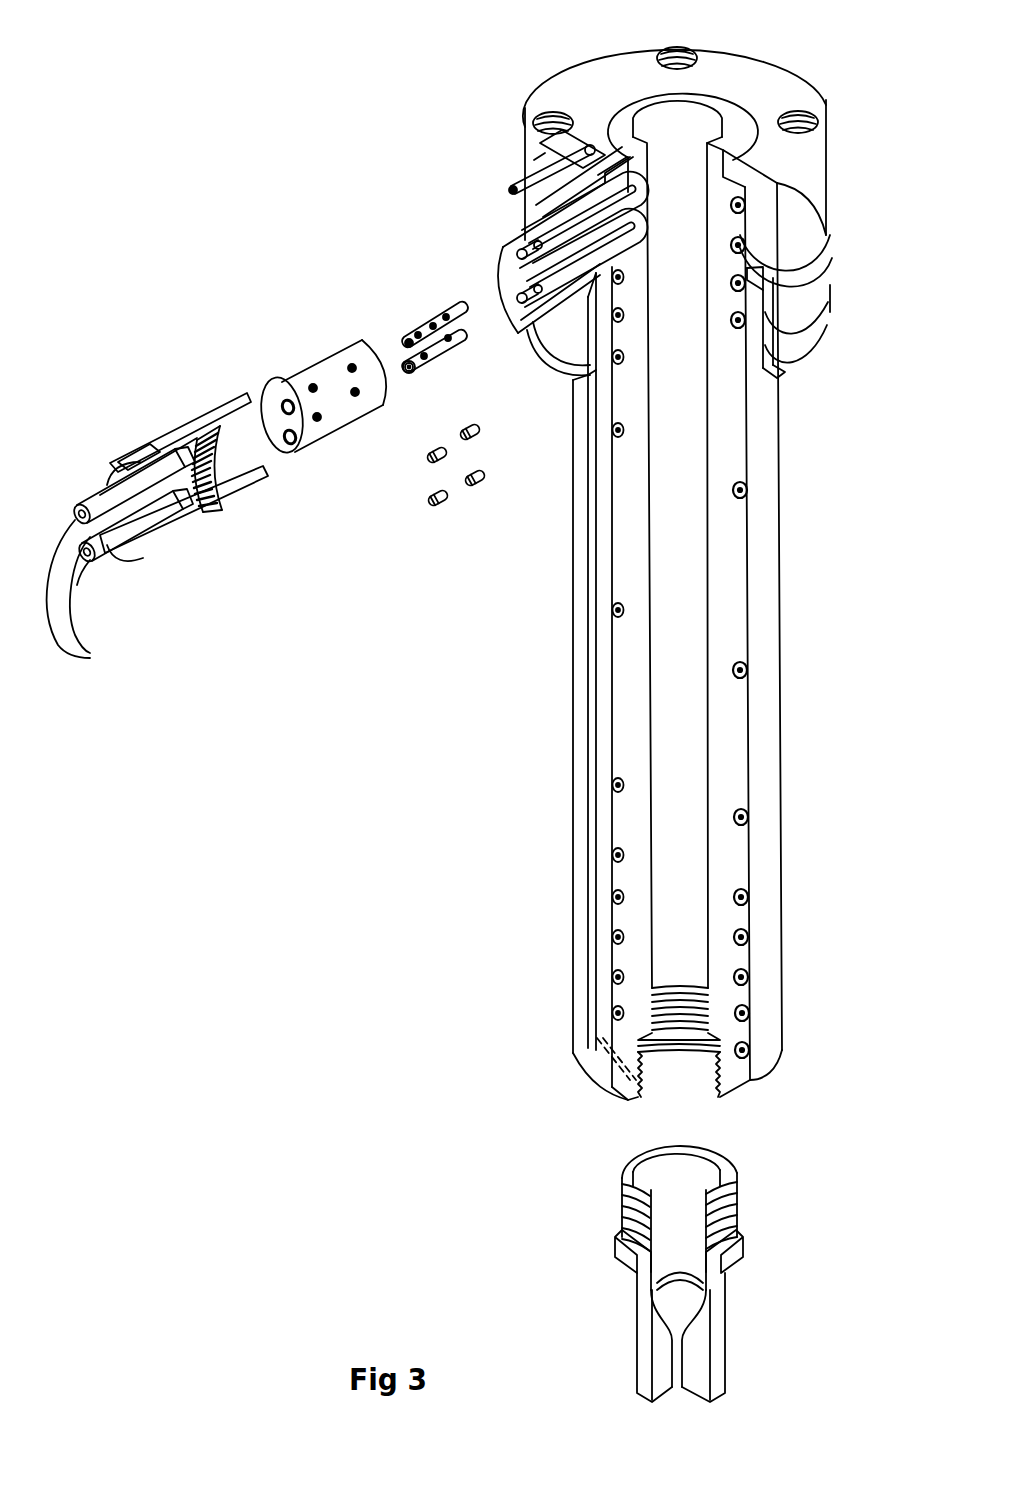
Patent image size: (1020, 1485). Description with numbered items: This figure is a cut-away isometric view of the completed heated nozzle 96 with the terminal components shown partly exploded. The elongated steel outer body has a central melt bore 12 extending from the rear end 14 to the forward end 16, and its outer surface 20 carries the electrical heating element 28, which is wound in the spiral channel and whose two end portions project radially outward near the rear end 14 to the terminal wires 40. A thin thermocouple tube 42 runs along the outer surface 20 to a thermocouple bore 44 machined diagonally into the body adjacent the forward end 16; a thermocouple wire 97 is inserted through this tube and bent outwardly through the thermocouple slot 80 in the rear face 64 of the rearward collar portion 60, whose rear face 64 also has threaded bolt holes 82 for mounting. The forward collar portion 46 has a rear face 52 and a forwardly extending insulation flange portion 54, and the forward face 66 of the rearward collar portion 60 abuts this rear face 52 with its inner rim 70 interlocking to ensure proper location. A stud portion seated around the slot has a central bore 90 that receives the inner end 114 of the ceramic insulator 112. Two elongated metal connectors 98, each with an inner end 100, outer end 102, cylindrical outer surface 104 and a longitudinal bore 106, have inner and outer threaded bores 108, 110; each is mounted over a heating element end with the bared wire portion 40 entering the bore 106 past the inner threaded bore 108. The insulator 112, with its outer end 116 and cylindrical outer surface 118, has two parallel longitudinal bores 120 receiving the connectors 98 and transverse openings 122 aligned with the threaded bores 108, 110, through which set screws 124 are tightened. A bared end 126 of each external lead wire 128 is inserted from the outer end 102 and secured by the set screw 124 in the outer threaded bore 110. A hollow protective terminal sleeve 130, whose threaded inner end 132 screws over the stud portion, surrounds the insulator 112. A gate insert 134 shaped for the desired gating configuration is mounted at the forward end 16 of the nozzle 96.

The central melt bore 12 is at (687, 127).
The rear end 14 is at (695, 95).
The forward end 16 is at (723, 1103).
The outer surface 20 is at (772, 425).
The electrical heating element 28 is at (615, 607).
The terminal wire 40 is at (505, 268).
The thermocouple tube 42 is at (590, 779).
The thermocouple bore 44 is at (580, 1052).
The forward collar portion 46 is at (790, 320).
The rear face 52 is at (760, 282).
The insulation flange portion 54 is at (783, 343).
The rearward collar portion 60 is at (812, 175).
The rear face 64 is at (605, 70).
The forward face 66 is at (775, 318).
The inner rim 70 is at (748, 268).
The thermocouple slot 80 is at (553, 157).
The threaded bolt holes 82 is at (800, 118).
The central bore 90 is at (503, 280).
The heated nozzle 96 is at (573, 712).
The thermocouple wire 97 is at (527, 173).
The elongated metal connector 98 is at (433, 350).
The inner end 100 is at (433, 313).
The outer end 102 is at (413, 337).
The cylindrical outer surface 104 is at (460, 305).
The longitudinal bore 106 is at (407, 338).
The inner threaded bore 108 is at (450, 343).
The outer threaded bore 110 is at (410, 372).
The insulator 112 is at (270, 397).
The inner end 114 is at (382, 395).
The outer end 116 is at (280, 448).
The cylindrical outer surface 118 is at (331, 412).
The longitudinal bores 120 is at (283, 402).
The transverse openings 122 is at (313, 388).
The set screw 124 is at (483, 487).
The bared end 126 is at (160, 450).
The external lead wire 128 is at (87, 598).
The protective terminal sleeve 130 is at (157, 540).
The threaded inner end 132 is at (203, 513).
The gate insert 134 is at (747, 1253).